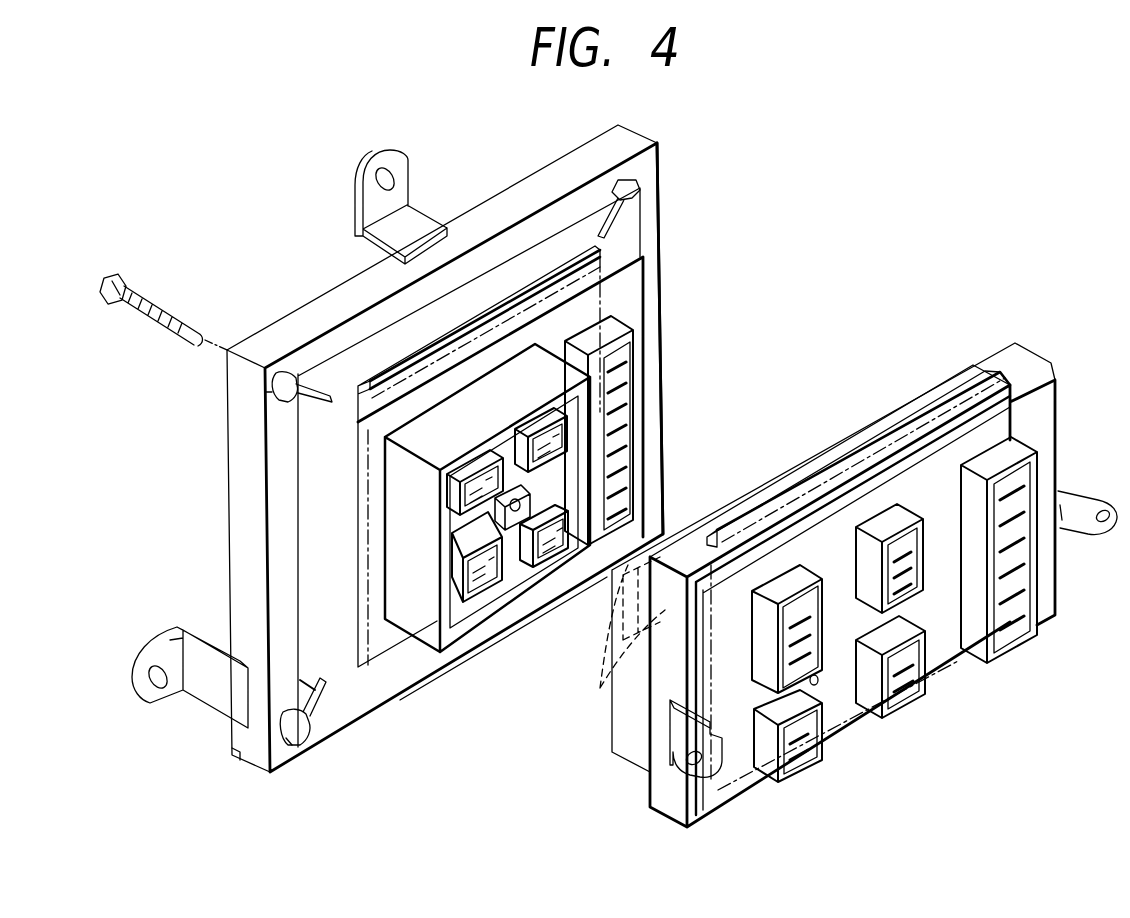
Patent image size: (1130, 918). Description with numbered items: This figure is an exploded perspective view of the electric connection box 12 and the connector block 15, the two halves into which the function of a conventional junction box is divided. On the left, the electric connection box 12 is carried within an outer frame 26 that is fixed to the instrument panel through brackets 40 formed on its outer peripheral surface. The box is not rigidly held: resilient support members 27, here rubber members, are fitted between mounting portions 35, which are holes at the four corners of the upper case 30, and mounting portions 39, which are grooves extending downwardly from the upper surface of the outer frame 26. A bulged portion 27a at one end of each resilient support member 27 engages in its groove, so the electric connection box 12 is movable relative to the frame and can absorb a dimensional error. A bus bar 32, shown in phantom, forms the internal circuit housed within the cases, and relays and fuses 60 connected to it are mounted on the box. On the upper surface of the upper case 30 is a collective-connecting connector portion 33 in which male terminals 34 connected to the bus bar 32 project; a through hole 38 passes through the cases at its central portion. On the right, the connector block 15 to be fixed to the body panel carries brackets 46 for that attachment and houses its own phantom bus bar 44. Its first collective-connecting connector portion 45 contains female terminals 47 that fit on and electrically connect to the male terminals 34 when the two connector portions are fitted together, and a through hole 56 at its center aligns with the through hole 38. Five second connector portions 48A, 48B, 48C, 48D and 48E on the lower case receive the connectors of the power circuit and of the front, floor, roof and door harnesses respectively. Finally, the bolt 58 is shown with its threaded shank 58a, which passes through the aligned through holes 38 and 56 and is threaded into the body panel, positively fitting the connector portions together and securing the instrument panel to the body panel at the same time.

The electric connection box 12 is at (407, 690).
The connector block 15 is at (1007, 343).
The outer frame 26 is at (240, 545).
The resilient support member 27 is at (300, 392).
The bulged portion 27a is at (237, 755).
The upper case 30 is at (643, 364).
The bus bar 32 is at (560, 262).
The collective-connecting connector portion 33 is at (487, 625).
The male terminals 34 is at (490, 588).
The mounting portions 35 is at (305, 705).
The through hole 38 is at (519, 515).
The mounting portions 39 is at (262, 400).
The brackets 40 is at (410, 216).
The bus bar 44 is at (983, 370).
The first collective-connecting connector portion 45 is at (617, 733).
The brackets 46 is at (1070, 498).
The female terminals 47 is at (612, 676).
The second connector portion 48A is at (1040, 620).
The second connector portion 48B is at (800, 790).
The second connector portion 48C is at (790, 590).
The second connector portion 48D is at (913, 700).
The second connector portion 48E is at (893, 528).
The through hole 56 is at (820, 688).
The bolt 58 is at (116, 278).
The threaded shank 58a is at (132, 312).
The relays and fuses 60 is at (637, 340).